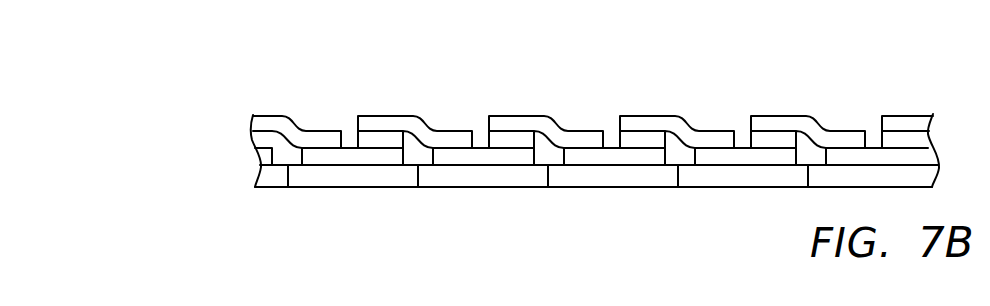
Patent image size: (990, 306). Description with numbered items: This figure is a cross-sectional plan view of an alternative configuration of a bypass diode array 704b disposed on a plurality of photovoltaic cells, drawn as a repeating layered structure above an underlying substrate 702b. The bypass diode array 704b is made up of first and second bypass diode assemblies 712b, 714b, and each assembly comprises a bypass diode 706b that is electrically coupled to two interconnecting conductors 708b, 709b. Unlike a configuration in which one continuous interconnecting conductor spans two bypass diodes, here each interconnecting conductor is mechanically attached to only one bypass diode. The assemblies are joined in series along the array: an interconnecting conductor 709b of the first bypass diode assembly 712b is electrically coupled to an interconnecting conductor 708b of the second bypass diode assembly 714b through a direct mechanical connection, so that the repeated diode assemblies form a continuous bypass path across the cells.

The substrate 702b is at (348, 178).
The bypass diode array 704b is at (538, 152).
The bypass diode 706b is at (743, 147).
The interconnecting conductor 708b is at (633, 157).
The interconnecting conductor 709b is at (677, 120).
The first bypass diode assembly 712b is at (603, 157).
The second bypass diode assembly 714b is at (645, 137).